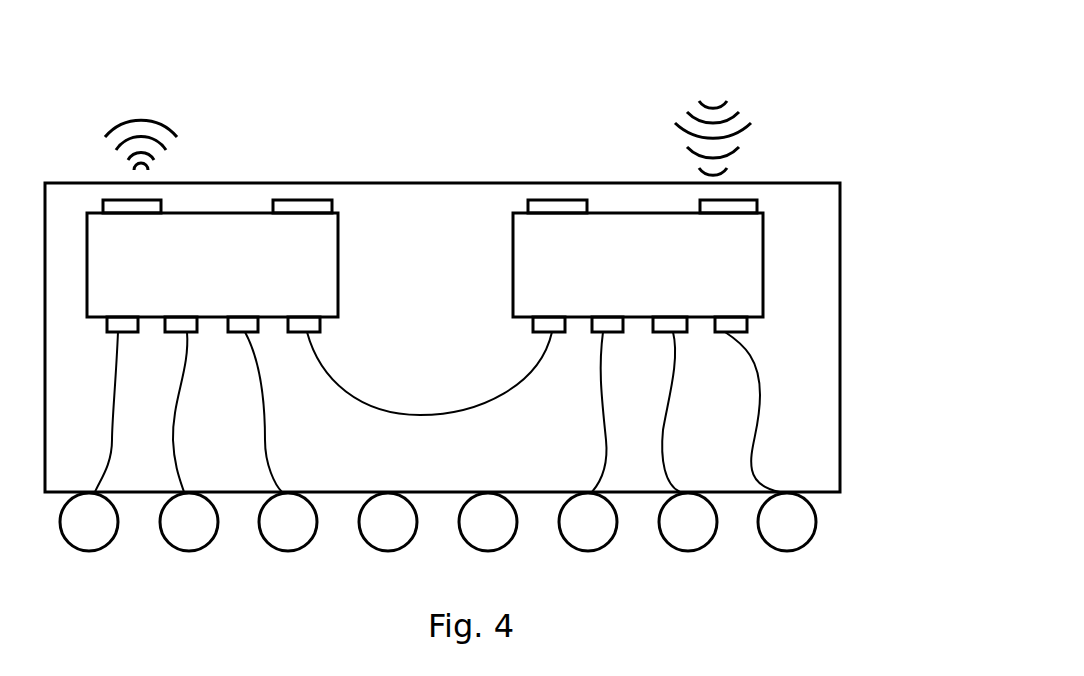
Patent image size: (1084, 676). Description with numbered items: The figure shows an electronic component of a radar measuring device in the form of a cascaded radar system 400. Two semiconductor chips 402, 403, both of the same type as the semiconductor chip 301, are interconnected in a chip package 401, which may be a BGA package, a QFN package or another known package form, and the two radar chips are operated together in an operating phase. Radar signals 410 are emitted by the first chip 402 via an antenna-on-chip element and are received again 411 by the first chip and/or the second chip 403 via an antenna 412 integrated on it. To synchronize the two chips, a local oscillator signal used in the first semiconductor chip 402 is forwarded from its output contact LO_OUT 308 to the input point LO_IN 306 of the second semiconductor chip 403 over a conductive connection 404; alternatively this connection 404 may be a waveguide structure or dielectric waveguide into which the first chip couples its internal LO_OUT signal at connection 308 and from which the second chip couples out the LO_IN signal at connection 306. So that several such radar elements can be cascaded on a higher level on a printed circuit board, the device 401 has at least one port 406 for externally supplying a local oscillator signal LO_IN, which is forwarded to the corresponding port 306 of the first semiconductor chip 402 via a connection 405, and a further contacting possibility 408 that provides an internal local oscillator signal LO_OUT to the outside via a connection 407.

The cascaded radar system 400 is at (396, 163).
The chip package 401 is at (840, 213).
The first semiconductor chip 402 is at (338, 261).
The second semiconductor chip 403 is at (148, 200).
The conductive connection 404 is at (412, 418).
The connection 405 is at (110, 432).
The port 406 is at (103, 547).
The connection 407 is at (760, 400).
The further contacting possibility 408 is at (815, 538).
The radar signals 410 is at (150, 112).
The received radar signals 411 is at (757, 102).
The antenna 412 is at (748, 200).
The semiconductor chip 301 is at (338, 236).
The input point LO_IN 306 is at (130, 332).
The output contact LO_OUT 308 is at (320, 331).